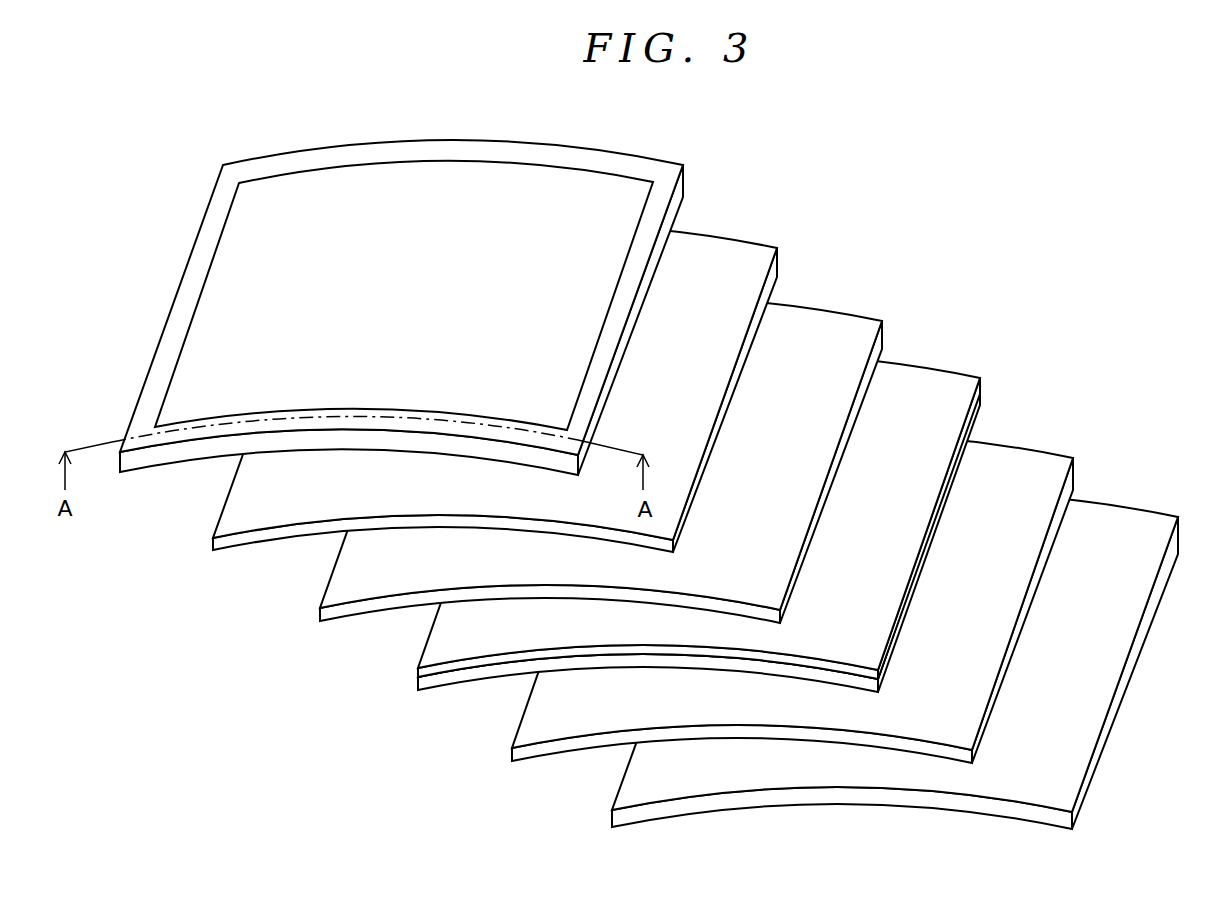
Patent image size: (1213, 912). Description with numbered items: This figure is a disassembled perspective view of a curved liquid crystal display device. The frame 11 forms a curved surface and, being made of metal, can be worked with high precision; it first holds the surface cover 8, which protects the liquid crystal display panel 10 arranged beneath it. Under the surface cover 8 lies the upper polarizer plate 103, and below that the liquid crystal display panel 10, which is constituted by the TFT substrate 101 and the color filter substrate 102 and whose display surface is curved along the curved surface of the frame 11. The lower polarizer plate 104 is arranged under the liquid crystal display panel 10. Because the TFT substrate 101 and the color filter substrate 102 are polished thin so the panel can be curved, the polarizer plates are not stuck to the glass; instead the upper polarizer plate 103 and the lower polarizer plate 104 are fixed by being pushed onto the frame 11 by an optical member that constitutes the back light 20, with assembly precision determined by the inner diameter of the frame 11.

The frame 11 is at (593, 162).
The surface cover 8 is at (740, 258).
The liquid crystal display panel 10 is at (683, 473).
The upper polarizer plate 103 is at (838, 323).
The color filter substrate 102 is at (928, 380).
The TFT substrate 101 is at (975, 427).
The lower polarizer plate 104 is at (1036, 465).
The back light 20 is at (1150, 527).